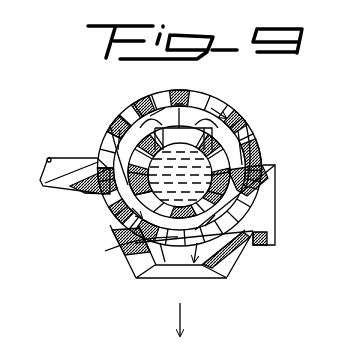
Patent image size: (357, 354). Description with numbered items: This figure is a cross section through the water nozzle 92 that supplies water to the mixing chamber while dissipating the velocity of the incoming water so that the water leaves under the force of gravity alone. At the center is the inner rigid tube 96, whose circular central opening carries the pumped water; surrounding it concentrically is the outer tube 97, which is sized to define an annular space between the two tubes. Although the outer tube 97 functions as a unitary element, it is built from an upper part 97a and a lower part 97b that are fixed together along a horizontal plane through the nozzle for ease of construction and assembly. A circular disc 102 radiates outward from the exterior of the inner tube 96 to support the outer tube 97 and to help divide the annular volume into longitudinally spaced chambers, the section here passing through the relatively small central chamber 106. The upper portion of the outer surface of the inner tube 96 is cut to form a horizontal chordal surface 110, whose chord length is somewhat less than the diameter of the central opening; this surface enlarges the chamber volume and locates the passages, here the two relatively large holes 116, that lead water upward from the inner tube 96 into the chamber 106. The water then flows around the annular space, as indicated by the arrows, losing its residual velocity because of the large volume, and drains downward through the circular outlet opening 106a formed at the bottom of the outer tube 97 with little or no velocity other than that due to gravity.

The nozzle 92 is at (100, 107).
The inner rigid tube 96 is at (224, 153).
The outer tube 97 is at (262, 127).
The upper part of outer tube 97a is at (214, 102).
The lower part of outer tube 97b is at (245, 200).
The circular disc 102 is at (130, 251).
The central chamber 106 is at (175, 95).
The outlet opening 106a is at (198, 282).
The chordal surface 110 is at (184, 106).
The holes 116 is at (134, 130).